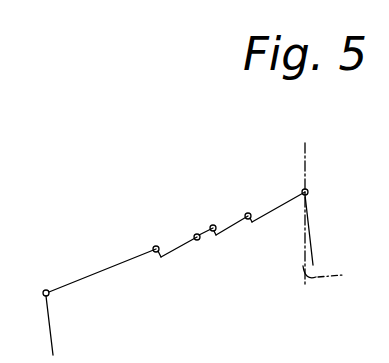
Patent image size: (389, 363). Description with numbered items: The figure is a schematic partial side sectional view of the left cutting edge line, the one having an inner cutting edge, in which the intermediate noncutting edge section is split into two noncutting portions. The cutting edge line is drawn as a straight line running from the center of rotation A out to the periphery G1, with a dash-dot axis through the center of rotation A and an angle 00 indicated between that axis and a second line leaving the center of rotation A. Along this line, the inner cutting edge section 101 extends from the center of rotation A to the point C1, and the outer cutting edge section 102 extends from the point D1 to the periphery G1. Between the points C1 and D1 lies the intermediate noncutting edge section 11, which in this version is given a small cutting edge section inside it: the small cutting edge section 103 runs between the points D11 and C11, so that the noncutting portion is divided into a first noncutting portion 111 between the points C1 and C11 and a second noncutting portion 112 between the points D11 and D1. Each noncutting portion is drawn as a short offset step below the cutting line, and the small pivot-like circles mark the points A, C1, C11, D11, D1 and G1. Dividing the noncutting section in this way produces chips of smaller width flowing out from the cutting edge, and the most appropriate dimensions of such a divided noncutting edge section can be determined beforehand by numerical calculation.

The intermediate noncutting edge section 11 is at (193, 234).
The inner cutting edge section 101 is at (273, 211).
The outer cutting edge section 102 is at (125, 266).
The connecting link 103 is at (203, 238).
The lever segment 111 is at (239, 215).
The lever segment 112 is at (173, 247).
The angle theta 00 is at (359, 276).
The periphery G1 is at (39, 273).
The point D1 is at (154, 240).
The pivot point D11 is at (195, 223).
The pivot point C11 is at (224, 211).
The point C1 is at (252, 197).
The center of rotation A is at (319, 184).